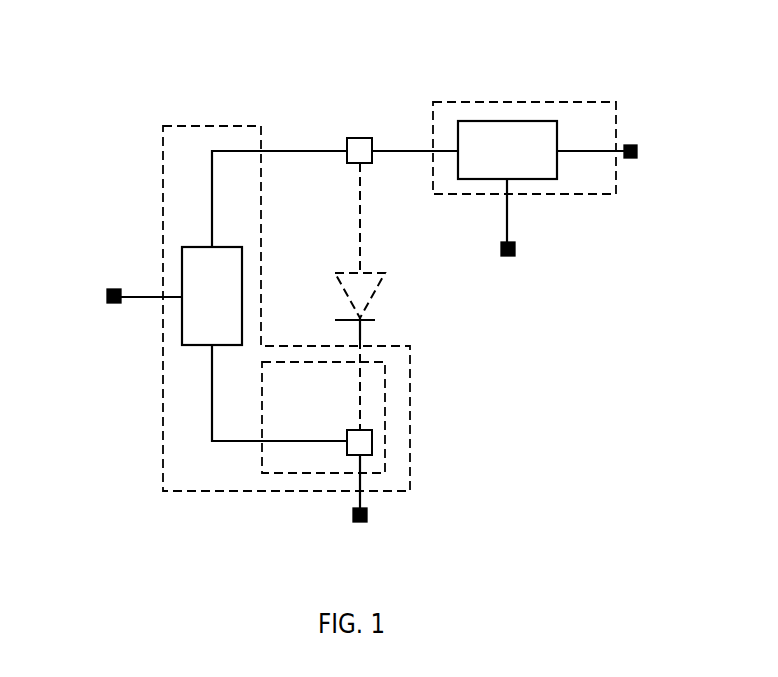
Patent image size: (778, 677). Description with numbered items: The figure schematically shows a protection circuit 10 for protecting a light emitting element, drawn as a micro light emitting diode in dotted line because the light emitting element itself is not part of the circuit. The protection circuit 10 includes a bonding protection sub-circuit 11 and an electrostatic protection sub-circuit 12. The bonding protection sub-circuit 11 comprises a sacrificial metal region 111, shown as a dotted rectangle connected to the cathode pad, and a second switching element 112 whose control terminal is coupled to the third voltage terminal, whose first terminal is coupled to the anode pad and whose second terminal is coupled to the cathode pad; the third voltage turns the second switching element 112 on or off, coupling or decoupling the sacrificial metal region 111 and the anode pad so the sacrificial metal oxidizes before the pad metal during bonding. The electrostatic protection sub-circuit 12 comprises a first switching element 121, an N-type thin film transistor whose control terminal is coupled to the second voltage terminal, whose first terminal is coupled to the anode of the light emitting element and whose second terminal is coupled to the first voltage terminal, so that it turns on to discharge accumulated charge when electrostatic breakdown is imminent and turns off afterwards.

The protection circuit 10 is at (72, 34).
The bonding protection sub-circuit 11 is at (162, 248).
The sacrificial metal region 111 is at (323, 406).
The second switching element 112 is at (212, 296).
The electrostatic protection sub-circuit 12 is at (482, 102).
The first switching element 121 is at (507, 150).